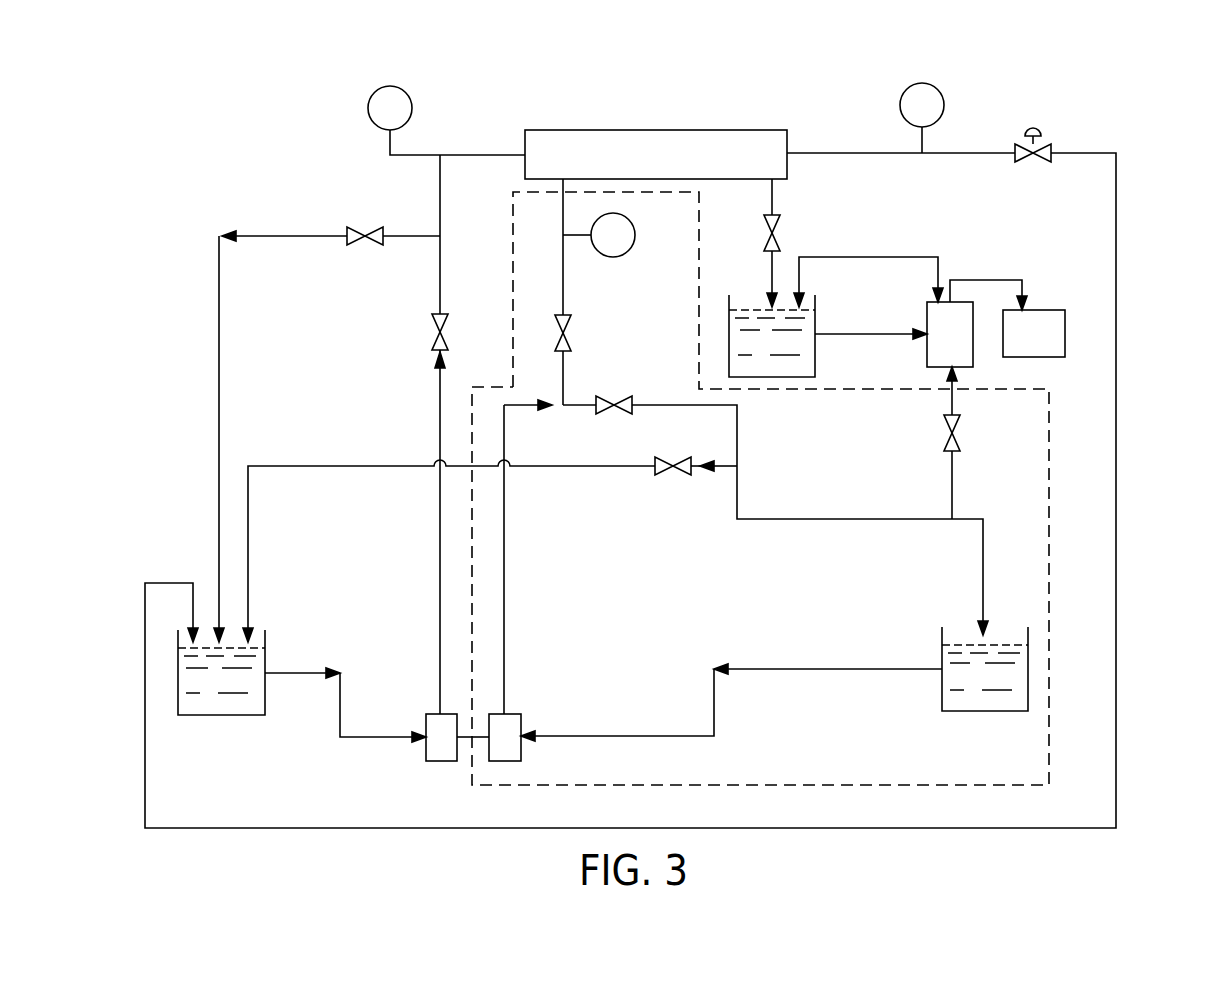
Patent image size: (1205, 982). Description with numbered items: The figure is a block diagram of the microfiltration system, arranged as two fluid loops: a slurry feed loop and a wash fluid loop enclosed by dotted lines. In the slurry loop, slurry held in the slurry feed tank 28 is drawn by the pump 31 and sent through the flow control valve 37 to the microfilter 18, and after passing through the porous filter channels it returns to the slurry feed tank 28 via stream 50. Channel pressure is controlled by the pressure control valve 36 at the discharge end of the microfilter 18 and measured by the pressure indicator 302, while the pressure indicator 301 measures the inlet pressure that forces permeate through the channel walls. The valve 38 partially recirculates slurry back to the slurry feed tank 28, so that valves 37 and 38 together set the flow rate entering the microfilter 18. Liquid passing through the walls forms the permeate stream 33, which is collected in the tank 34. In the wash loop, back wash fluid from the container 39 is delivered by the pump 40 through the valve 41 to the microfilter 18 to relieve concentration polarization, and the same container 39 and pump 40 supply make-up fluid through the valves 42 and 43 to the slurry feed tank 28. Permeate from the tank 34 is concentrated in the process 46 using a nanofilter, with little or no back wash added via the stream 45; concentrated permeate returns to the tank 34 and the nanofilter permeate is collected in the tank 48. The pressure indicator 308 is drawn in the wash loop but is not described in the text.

The microfilter 18 is at (655, 130).
The slurry feed tank 28 is at (222, 715).
The pump 31 is at (428, 714).
The permeate stream 33 is at (774, 200).
The tank 34 is at (815, 345).
The pressure control valve 36 is at (1031, 162).
The flow control valve 37 is at (437, 334).
The valve 38 is at (362, 245).
The container 39 is at (985, 711).
The pump 40 is at (515, 714).
The valve 41 is at (566, 333).
The valve 42 is at (610, 414).
The valve 43 is at (669, 475).
The stream 45 is at (950, 398).
The process 46 is at (925, 315).
The tank 48 is at (1045, 310).
The stream 50 is at (1116, 477).
The pressure indicator 301 is at (390, 86).
The pressure indicator 302 is at (922, 83).
The pressure gauge 308 is at (613, 257).